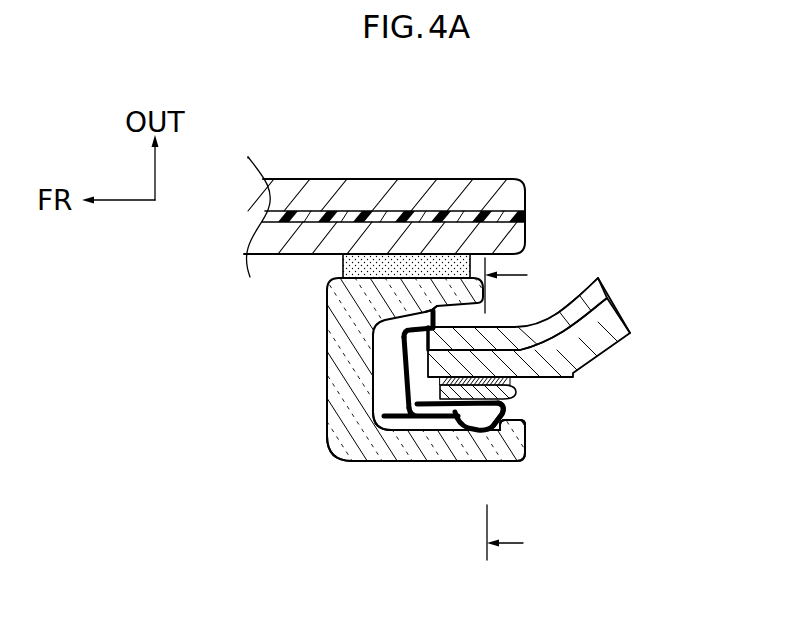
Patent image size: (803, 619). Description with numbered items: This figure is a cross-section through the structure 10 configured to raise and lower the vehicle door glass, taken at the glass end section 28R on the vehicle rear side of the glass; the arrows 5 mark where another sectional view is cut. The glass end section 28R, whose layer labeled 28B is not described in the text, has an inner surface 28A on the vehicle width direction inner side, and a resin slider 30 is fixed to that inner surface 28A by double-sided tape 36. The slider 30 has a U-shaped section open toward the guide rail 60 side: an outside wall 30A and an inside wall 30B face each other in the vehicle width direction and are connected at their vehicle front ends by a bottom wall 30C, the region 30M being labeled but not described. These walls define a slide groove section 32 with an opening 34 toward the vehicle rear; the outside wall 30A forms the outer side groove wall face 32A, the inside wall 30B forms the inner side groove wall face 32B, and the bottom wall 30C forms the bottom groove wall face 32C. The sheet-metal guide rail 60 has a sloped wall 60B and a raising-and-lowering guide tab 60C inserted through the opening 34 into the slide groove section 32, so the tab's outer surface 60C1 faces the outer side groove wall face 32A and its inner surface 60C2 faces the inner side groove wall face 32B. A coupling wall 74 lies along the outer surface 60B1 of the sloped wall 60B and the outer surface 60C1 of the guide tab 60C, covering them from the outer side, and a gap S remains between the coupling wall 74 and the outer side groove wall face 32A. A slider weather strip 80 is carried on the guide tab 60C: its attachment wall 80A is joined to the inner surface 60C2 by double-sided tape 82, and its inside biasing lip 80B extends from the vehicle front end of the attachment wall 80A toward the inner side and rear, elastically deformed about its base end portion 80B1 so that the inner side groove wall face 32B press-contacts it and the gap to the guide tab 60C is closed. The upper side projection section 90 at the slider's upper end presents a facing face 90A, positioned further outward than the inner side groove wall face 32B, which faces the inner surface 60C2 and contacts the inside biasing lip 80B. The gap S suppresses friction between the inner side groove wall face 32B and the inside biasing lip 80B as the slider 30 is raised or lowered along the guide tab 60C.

The structure configured to raise and lower vehicle door glass 10 is at (244, 524).
The glass end section 28R is at (384, 205).
The intermediate layer of door glass 28B is at (417, 178).
The inner surface 28A is at (302, 257).
The double-sided tape 36 is at (438, 263).
The slider 30 is at (418, 344).
The outside wall 30A is at (386, 290).
The inside wall 30B is at (453, 462).
The bottom wall 30C is at (350, 368).
The corner portion of holder 30M is at (316, 444).
The double-sided tape 82 is at (323, 423).
The slider weather strip 80 is at (418, 483).
The attachment wall 80A is at (497, 463).
The inside biasing lip 80B is at (440, 440).
The base end portion 80B1 is at (387, 462).
The slide groove section 32 is at (405, 325).
The outer side groove wall face 32A is at (400, 325).
The inner side groove wall face 32B is at (527, 465).
The bottom groove wall face 32C is at (400, 390).
The opening 34 is at (446, 320).
The gap S is at (385, 345).
The section line 5 is at (516, 409).
The guide rail 60 is at (594, 331).
The sloped wall 60B is at (596, 288).
The outer surface 60B1 is at (577, 298).
The raising-and-lowering guide tab 60C is at (555, 373).
The outer surface 60C1 is at (577, 373).
The inner surface 60C2 is at (530, 375).
The coupling wall 74 is at (562, 305).
The upper side projection section 90 is at (539, 445).
The facing face 90A is at (520, 413).